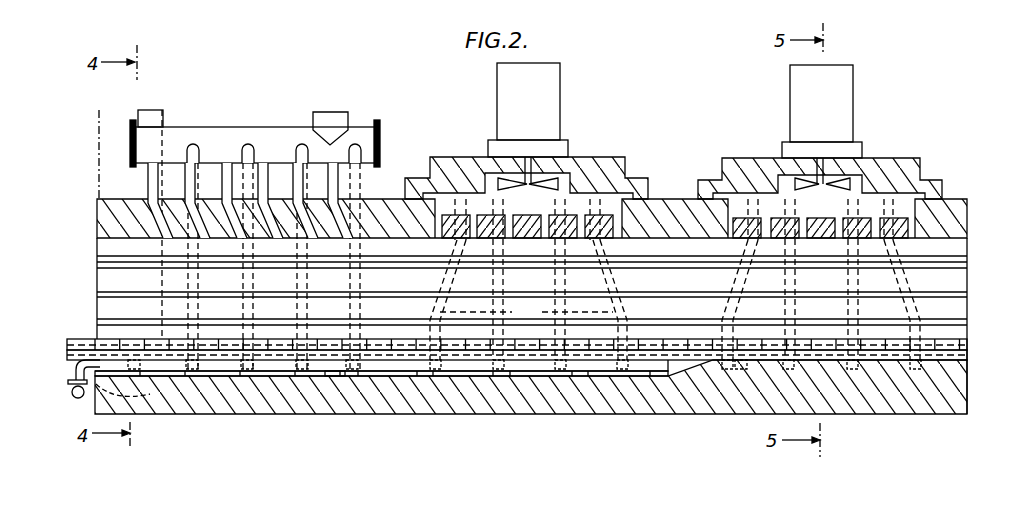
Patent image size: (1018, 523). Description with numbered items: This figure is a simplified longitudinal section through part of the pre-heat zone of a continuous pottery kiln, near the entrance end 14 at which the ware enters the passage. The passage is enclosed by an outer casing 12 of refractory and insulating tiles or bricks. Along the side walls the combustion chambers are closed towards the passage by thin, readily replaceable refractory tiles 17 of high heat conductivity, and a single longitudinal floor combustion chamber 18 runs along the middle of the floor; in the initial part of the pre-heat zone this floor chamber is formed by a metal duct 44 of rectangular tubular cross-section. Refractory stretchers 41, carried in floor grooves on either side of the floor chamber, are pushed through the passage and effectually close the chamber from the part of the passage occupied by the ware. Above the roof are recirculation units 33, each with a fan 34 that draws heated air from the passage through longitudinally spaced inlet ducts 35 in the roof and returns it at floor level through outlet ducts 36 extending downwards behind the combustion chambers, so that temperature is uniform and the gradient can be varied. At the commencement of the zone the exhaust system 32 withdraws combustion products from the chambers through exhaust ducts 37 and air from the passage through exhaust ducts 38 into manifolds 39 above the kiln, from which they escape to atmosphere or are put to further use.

The outer casing 12 is at (667, 407).
The entrance end of passage 14 is at (88, 279).
The refractory tiles 17 is at (105, 283).
The floor combustion chamber 18 is at (332, 376).
The exhaust system 32 is at (219, 138).
The recirculation unit 33 is at (589, 171).
The fan 34 is at (502, 182).
The inlet ducts 35 is at (580, 240).
The outlet ducts 36 is at (675, 300).
The exhaust ducts 37 is at (87, 396).
The exhaust ducts 38 is at (158, 212).
The manifolds 39 is at (265, 143).
The refractory stretchers 41 is at (377, 350).
The metal duct 44 is at (467, 376).